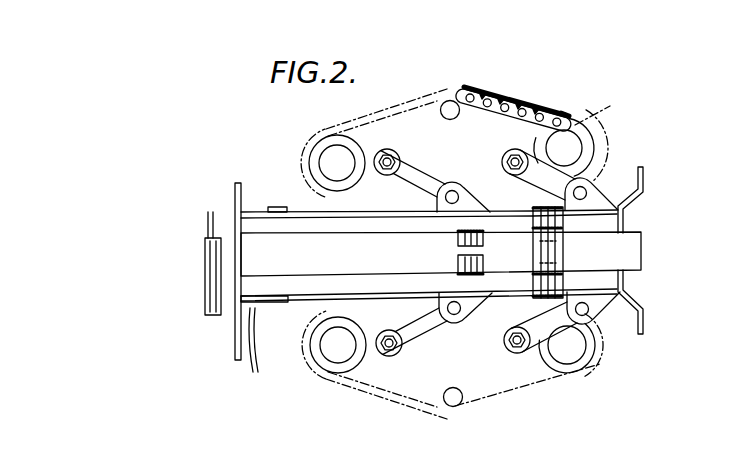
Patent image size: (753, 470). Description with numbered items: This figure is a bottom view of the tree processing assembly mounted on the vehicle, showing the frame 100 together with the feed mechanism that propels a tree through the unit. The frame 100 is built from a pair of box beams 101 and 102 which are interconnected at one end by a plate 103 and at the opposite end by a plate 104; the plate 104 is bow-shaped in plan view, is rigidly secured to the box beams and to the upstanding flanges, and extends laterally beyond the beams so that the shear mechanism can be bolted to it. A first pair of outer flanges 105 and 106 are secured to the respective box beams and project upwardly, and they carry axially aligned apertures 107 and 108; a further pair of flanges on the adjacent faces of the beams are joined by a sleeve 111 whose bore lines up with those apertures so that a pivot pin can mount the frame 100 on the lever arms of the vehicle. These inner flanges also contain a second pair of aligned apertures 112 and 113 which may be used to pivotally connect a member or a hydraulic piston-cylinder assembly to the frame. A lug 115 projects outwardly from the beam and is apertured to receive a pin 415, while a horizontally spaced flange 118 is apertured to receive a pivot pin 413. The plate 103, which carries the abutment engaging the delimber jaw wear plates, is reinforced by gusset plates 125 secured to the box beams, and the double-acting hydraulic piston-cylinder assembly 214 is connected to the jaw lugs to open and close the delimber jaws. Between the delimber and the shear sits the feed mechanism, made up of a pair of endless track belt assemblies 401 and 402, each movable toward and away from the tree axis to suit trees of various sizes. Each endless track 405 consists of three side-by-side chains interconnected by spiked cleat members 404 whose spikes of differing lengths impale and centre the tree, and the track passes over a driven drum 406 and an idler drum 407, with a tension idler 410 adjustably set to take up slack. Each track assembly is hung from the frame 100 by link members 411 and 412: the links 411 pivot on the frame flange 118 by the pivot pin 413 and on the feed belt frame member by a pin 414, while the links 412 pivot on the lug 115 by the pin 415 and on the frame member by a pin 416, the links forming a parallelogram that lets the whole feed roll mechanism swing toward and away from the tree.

The frame 100 is at (297, 225).
The box beam 101 is at (246, 214).
The box beam 102 is at (263, 283).
The plate 103 is at (235, 192).
The plate 104 is at (643, 185).
The outer flange 105 is at (268, 207).
The outer flange 106 is at (310, 303).
The aperture 107 is at (563, 222).
The aperture 108 is at (556, 291).
The sleeve 111 is at (564, 253).
The aperture 112 is at (458, 238).
The aperture 113 is at (458, 262).
The lug 115 is at (472, 200).
The flange 118 is at (591, 200).
The gusset plate 125 is at (250, 352).
The hydraulic piston-cylinder assembly 214 is at (205, 264).
The endless track belt assembly 401 is at (477, 92).
The endless track belt assembly 402 is at (537, 391).
The spiked cleat member 404 is at (562, 117).
The endless track 405 is at (519, 98).
The driven drum 406 is at (579, 141).
The idler drum 407 is at (323, 139).
The tension idler 410 is at (450, 100).
The link member 411 is at (552, 172).
The link member 412 is at (434, 134).
The pivot pin 413 is at (591, 187).
The pin 414 is at (515, 155).
The pin 415 is at (452, 189).
The pin 416 is at (387, 149).